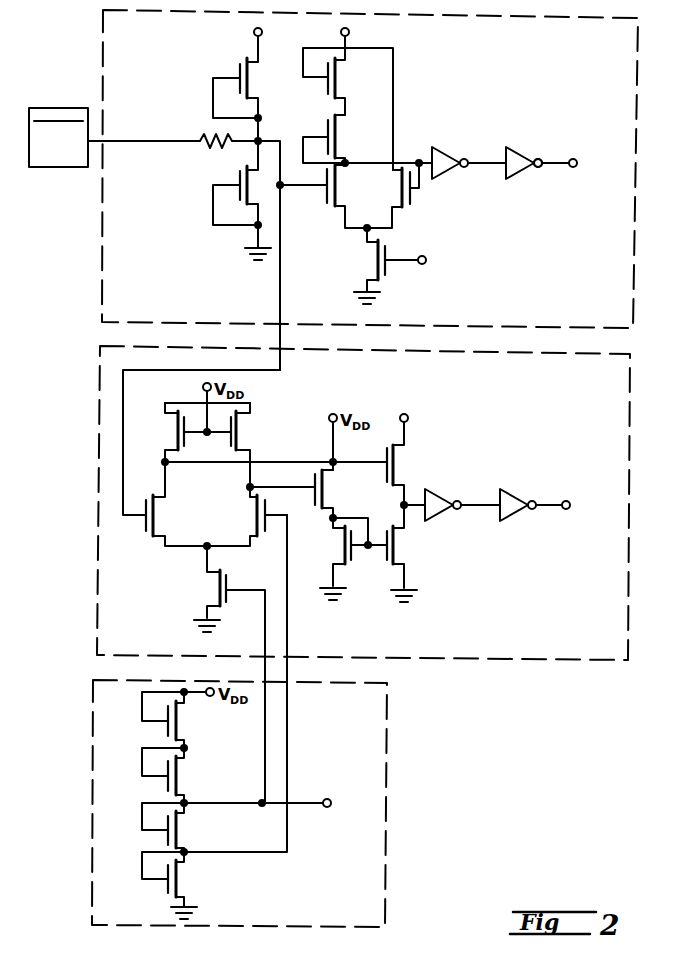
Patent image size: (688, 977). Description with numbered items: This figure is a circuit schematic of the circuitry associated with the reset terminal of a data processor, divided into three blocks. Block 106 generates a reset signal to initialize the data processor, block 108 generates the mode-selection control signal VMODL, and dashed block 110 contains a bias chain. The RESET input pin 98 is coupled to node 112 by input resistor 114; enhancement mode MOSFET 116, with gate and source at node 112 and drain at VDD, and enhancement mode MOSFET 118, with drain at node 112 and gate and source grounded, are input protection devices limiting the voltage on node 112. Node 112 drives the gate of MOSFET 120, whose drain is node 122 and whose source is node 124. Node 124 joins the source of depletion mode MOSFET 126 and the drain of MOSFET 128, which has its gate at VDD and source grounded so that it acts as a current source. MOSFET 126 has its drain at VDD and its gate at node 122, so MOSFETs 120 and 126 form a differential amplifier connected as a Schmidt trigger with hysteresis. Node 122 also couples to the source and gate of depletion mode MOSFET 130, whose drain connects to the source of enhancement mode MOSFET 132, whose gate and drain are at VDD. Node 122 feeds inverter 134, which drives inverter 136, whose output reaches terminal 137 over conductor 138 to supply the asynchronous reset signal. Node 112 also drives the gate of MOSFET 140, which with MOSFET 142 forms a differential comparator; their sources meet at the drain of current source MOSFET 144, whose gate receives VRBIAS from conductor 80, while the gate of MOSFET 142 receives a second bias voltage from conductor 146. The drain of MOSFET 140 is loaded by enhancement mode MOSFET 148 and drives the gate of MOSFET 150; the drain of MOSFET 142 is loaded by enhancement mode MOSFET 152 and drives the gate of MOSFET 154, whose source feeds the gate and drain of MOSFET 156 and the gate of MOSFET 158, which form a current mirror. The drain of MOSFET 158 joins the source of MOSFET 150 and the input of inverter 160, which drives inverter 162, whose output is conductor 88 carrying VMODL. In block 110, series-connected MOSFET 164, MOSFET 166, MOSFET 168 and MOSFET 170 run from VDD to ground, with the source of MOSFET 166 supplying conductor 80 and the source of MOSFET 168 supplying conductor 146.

The conductor 80 is at (323, 801).
The conductor 88 is at (549, 505).
The RESET input pin 98 is at (68, 106).
The block 106 is at (102, 283).
The block 108 is at (100, 371).
The block 110 is at (93, 724).
The node 112 is at (260, 141).
The input resistor 114 is at (198, 145).
The enhancement mode MOSFET 116 is at (240, 67).
The enhancement mode MOSFET 118 is at (238, 184).
The MOSFET 120 is at (326, 194).
The node 122 is at (352, 163).
The node 124 is at (367, 227).
The depletion mode MOSFET 126 is at (413, 197).
The MOSFET 128 is at (386, 272).
The depletion mode MOSFET 130 is at (345, 130).
The enhancement mode MOSFET 132 is at (345, 74).
The inverter 134 is at (447, 146).
The inverter 136 is at (521, 146).
The terminal 137 is at (577, 167).
The conductor 138 is at (541, 168).
The MOSFET 140 is at (144, 528).
The MOSFET 142 is at (258, 524).
The MOSFET 144 is at (227, 588).
The conductor 146 is at (289, 750).
The enhancement mode MOSFET 148 is at (176, 420).
The MOSFET 150 is at (398, 463).
The enhancement mode MOSFET 152 is at (242, 431).
The MOSFET 154 is at (311, 497).
The MOSFET 156 is at (340, 543).
The MOSFET 158 is at (396, 545).
The inverter 160 is at (440, 492).
The inverter 162 is at (515, 498).
The MOSFET 164 is at (165, 730).
The MOSFET 166 is at (165, 785).
The MOSFET 168 is at (165, 836).
The MOSFET 170 is at (165, 888).